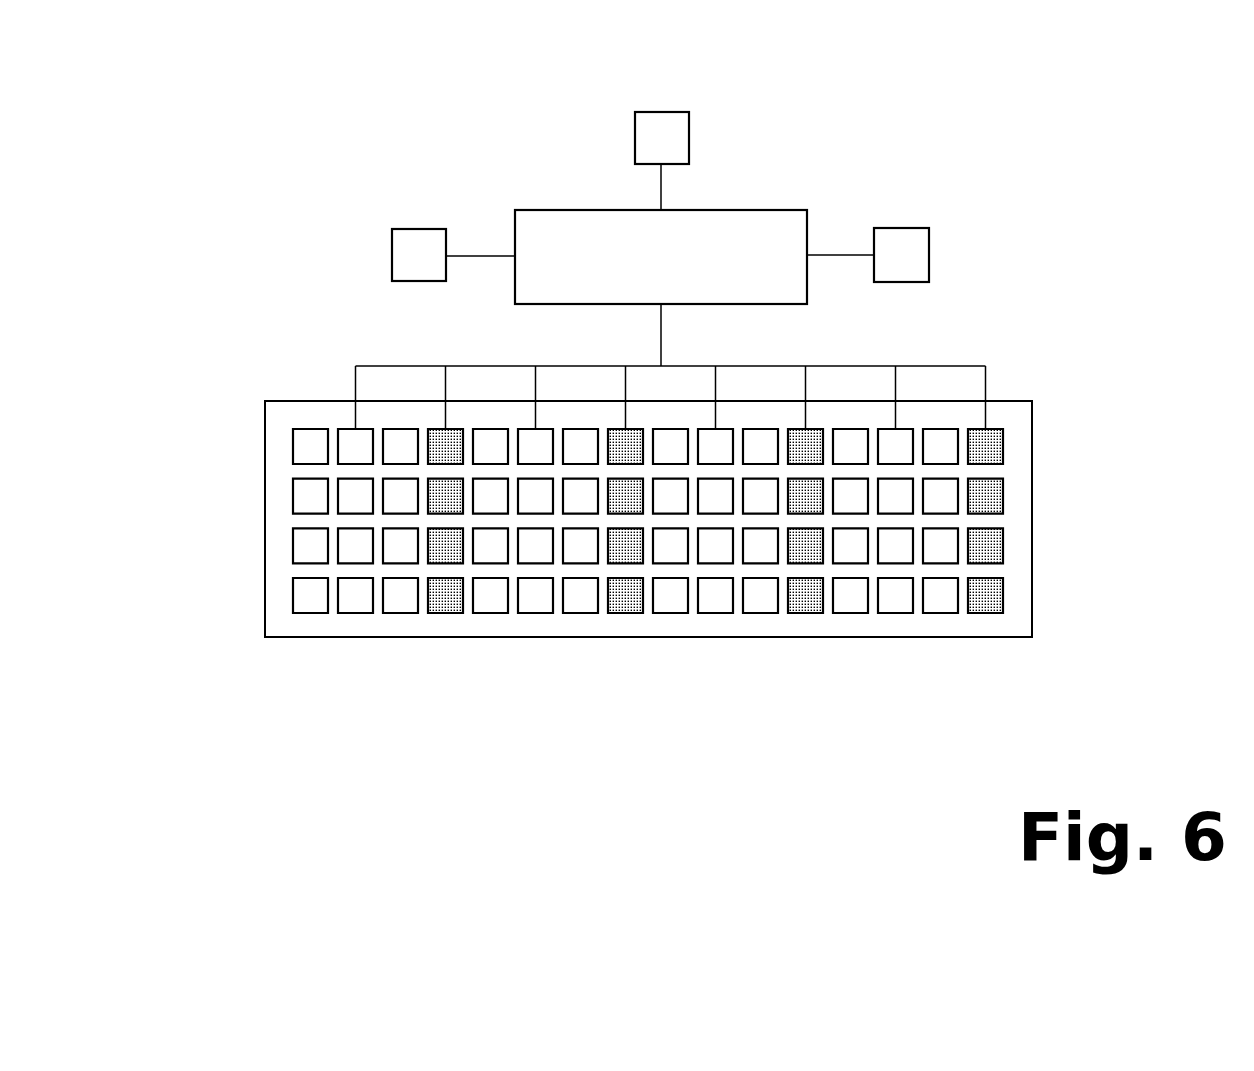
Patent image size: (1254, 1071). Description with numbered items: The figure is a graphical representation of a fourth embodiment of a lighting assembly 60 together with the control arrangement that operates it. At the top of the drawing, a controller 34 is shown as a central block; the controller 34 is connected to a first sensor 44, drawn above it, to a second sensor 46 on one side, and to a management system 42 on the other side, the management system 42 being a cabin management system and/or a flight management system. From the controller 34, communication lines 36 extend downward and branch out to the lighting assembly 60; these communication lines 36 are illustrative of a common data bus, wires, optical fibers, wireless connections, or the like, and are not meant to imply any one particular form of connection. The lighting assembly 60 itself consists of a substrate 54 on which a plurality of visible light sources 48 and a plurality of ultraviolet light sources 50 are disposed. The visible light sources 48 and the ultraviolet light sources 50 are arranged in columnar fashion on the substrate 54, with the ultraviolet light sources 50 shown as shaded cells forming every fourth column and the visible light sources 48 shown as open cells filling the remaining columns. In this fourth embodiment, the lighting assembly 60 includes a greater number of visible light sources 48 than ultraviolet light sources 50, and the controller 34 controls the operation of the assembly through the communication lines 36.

The controller 34 is at (778, 210).
The communication lines 36 is at (958, 366).
The management system 42 is at (392, 256).
The first sensor 44 is at (662, 112).
The second sensor 46 is at (929, 254).
The visible light source 48 is at (354, 613).
The ultraviolet light source 50 is at (625, 613).
The substrate 54 is at (1033, 520).
The lighting assembly 60 is at (272, 350).